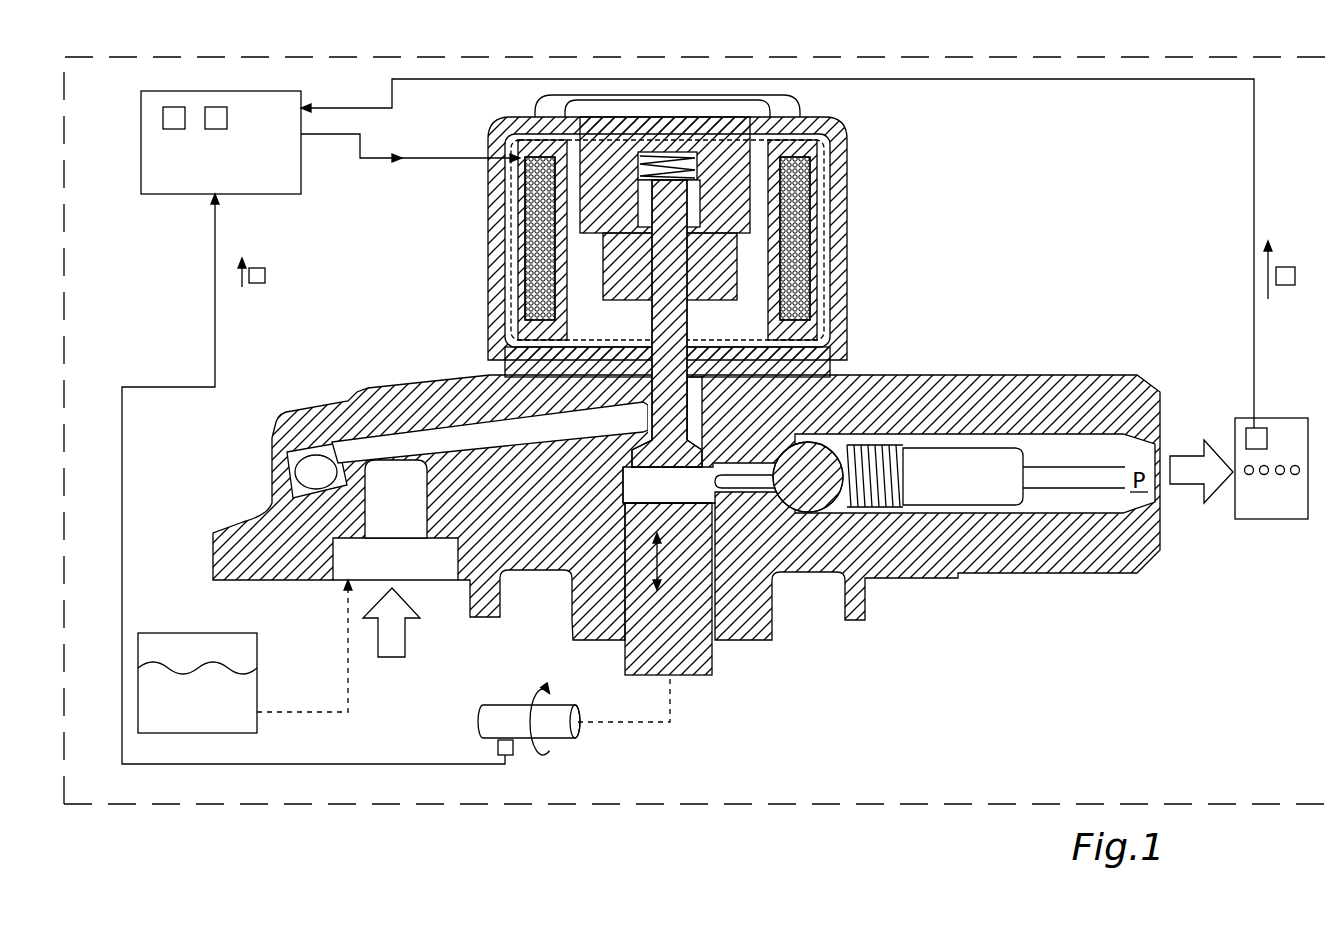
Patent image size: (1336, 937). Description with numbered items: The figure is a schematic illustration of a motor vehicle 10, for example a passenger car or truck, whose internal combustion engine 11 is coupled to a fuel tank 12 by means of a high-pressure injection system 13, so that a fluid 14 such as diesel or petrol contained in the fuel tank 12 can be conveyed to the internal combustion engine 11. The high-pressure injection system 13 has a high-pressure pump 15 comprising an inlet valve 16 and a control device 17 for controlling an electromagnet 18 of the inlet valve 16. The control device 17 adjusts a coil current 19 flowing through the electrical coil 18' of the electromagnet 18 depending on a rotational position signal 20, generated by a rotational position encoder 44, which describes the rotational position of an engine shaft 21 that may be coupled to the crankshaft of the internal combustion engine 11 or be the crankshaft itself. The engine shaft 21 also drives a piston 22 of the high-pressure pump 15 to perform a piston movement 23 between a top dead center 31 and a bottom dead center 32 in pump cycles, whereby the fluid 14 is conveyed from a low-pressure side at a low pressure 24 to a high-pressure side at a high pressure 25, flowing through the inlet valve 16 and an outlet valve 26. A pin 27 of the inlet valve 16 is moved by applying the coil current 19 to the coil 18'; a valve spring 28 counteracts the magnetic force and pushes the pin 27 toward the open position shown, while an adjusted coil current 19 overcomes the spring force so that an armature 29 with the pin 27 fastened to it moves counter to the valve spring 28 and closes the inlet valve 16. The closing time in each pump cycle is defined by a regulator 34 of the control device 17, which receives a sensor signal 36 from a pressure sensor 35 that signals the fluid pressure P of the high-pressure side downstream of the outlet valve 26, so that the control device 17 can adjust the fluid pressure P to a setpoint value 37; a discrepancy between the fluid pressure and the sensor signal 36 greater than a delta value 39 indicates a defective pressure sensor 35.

The motor vehicle 10 is at (962, 57).
The internal combustion engine 11 is at (1277, 520).
The fuel tank 12 is at (257, 724).
The high-pressure injection system 13 is at (649, 197).
The fluid 14 is at (243, 697).
The high-pressure pump 15 is at (740, 77).
The inlet valve 16 is at (660, 458).
The control device 17 is at (157, 195).
The electromagnet 18 is at (532, 178).
The electrical coil 18' is at (621, 238).
The coil current 19 is at (392, 162).
The rotational position signal 20 is at (267, 275).
The engine shaft 21 is at (513, 705).
The piston 22 is at (712, 660).
The piston movement 23 is at (665, 550).
The low pressure 24 is at (391, 660).
The high pressure 25 is at (1188, 487).
The outlet valve 26 is at (815, 500).
The pin 27 is at (740, 374).
The valve spring 28 is at (636, 160).
The armature 29 is at (715, 262).
The top dead center 31 is at (618, 470).
The bottom dead center 32 is at (618, 503).
The regulator 34 is at (172, 130).
The pressure sensor 35 is at (1258, 428).
The sensor signal 36 is at (1285, 267).
The setpoint value 37 is at (216, 107).
The delta value 39 is at (618, 488).
The rotational position encoder 44 is at (515, 750).